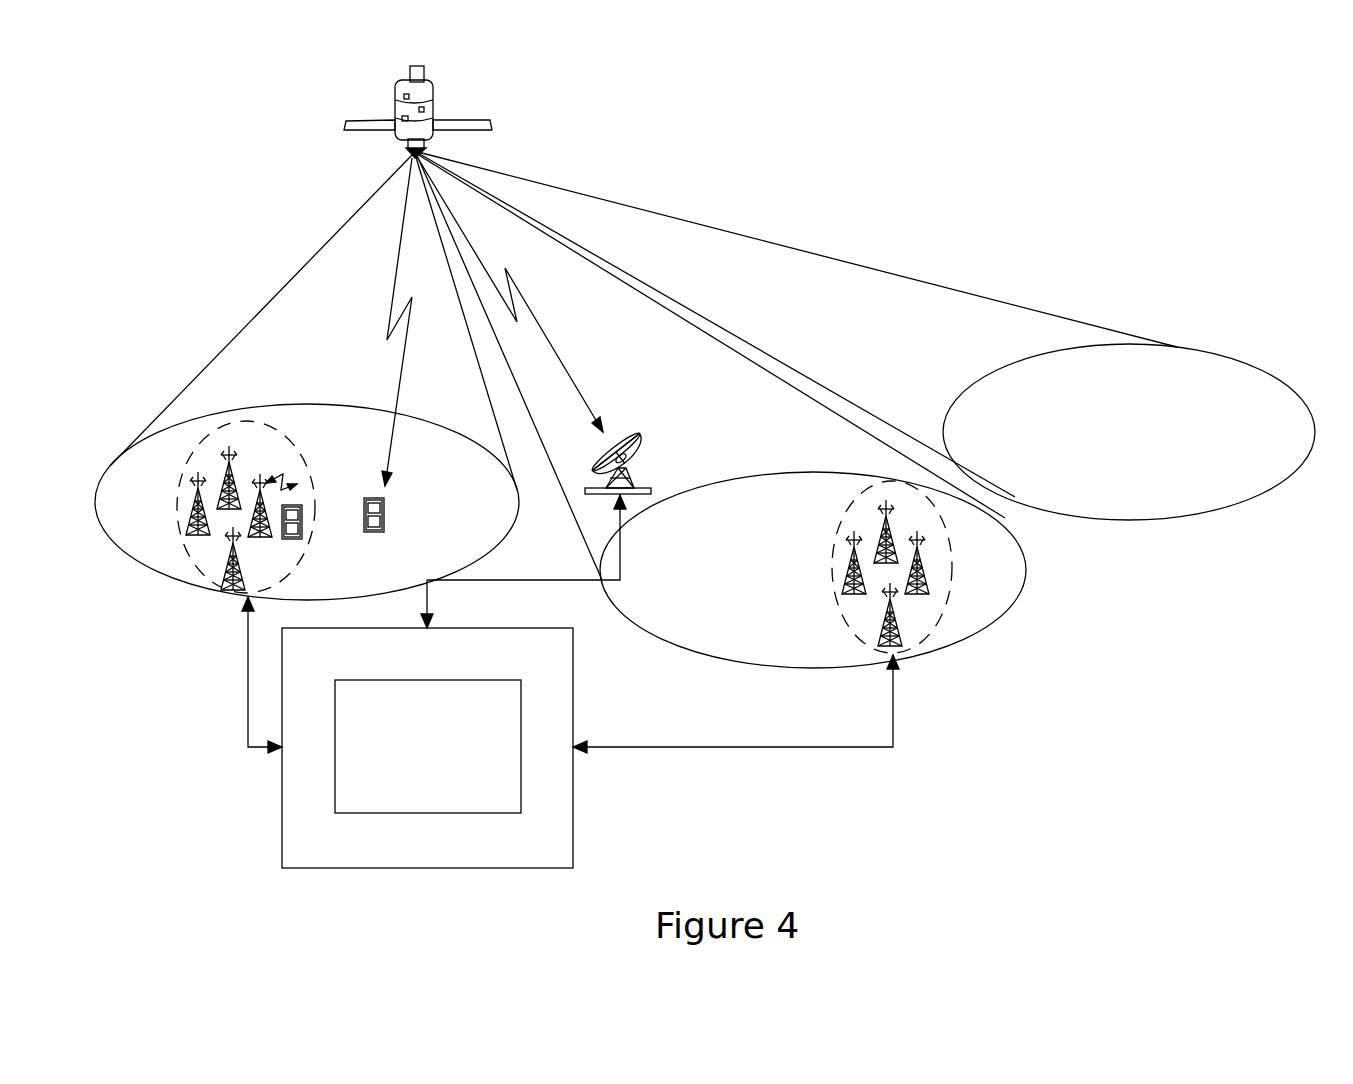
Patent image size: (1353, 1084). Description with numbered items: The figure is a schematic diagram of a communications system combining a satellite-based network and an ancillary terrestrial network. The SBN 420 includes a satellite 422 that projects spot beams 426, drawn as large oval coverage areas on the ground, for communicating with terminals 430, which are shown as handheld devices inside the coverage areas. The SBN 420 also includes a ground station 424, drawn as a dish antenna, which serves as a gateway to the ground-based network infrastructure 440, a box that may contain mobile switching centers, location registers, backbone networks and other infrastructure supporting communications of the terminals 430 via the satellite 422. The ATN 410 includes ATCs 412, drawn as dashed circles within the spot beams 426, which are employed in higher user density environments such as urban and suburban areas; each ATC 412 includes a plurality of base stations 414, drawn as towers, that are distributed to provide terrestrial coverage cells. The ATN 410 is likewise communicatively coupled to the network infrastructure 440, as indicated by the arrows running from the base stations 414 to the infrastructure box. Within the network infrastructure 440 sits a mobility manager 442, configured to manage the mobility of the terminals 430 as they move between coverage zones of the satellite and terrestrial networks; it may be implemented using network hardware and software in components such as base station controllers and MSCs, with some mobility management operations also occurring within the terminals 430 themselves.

The ATN 410 is at (1062, 706).
The ATC 412 is at (200, 573).
The base station 414 is at (264, 476).
The SBN 420 is at (686, 144).
The satellite 422 is at (452, 118).
The ground station 424 is at (652, 488).
The spot beam 426 is at (310, 402).
The terminal 430 is at (295, 539).
The network infrastructure 440 is at (428, 868).
The mobility manager 442 is at (428, 680).